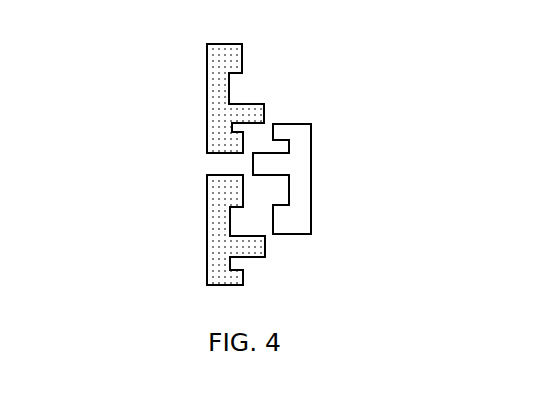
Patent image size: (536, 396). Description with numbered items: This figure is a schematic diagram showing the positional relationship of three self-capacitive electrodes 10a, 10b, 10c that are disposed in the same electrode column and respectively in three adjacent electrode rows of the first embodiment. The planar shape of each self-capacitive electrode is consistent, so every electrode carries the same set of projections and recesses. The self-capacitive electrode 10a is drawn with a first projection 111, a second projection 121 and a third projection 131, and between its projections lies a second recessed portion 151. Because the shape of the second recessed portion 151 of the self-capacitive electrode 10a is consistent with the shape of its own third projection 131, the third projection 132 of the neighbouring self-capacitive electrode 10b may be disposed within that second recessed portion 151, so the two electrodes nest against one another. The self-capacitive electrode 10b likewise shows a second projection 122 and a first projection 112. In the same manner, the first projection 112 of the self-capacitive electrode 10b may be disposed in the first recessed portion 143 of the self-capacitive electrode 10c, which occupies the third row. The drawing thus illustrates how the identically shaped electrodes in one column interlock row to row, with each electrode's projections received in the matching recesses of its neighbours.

The self-capacitive electrode 10a is at (207, 88).
The self-capacitive electrode 10b is at (310, 217).
The self-capacitive electrode 10c is at (207, 230).
The first projection 111 is at (240, 52).
The first projection 112 is at (280, 223).
The second projection 121 is at (257, 113).
The second projection 122 is at (272, 168).
The third projection 131 is at (235, 149).
The third projection 132 is at (280, 130).
The first recessed portion 143 is at (237, 218).
The second recessed portion 151 is at (233, 130).